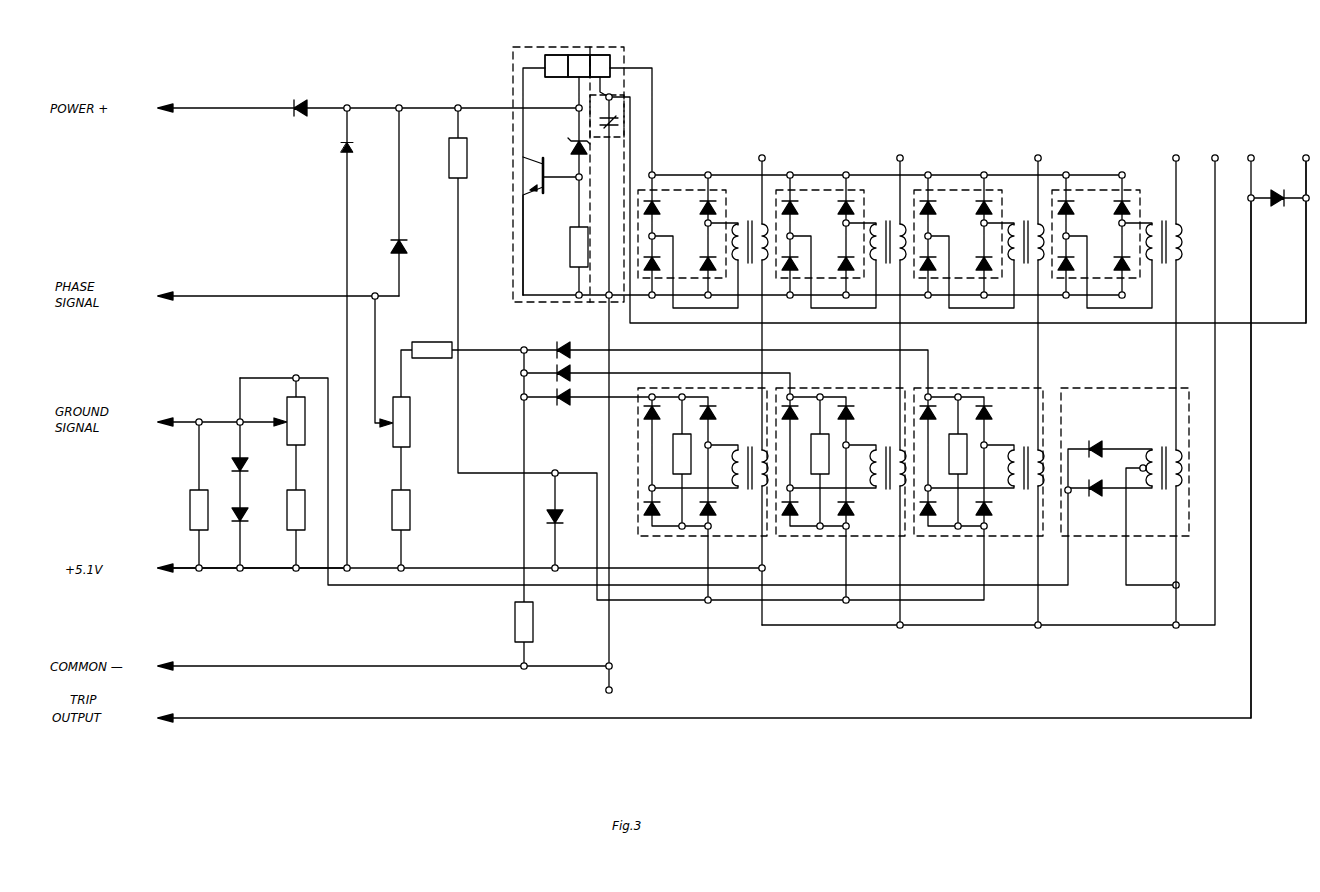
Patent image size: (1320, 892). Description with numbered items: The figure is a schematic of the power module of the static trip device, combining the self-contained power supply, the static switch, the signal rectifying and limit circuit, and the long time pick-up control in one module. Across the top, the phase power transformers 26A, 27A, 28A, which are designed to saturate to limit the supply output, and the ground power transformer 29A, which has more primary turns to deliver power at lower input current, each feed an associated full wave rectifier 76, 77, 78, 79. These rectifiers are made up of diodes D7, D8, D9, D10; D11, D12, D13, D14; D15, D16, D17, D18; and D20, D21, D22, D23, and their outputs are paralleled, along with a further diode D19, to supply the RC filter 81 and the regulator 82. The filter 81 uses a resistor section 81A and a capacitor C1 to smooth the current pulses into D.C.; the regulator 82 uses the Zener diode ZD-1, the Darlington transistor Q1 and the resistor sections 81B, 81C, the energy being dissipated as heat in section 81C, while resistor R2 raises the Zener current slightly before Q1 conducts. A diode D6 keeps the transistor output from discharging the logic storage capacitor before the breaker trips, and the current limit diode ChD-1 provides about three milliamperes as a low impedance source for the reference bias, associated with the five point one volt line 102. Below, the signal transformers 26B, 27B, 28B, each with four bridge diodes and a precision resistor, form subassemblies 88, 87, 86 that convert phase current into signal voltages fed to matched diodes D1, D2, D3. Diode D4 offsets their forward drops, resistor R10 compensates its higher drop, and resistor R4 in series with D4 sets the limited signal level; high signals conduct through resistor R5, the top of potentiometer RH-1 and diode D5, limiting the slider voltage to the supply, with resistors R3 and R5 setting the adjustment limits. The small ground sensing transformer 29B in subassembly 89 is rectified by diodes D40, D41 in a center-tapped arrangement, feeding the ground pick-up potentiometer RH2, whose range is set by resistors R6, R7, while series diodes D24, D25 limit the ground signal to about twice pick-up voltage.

The regulator 82 is at (513, 52).
The RC filter 81 is at (592, 44).
The resistor section 81A is at (598, 55).
The resistor section 81B is at (579, 55).
The resistor section 81C is at (556, 55).
The Zener diode ZD-1 is at (572, 142).
The transistor Q1 is at (547, 191).
The resistor R2 is at (569, 252).
The capacitor C1 is at (619, 122).
The diode D6 is at (303, 101).
The current limit diode ChD-1 is at (339, 146).
The resistor R4 is at (449, 159).
The diode D5 is at (405, 248).
The resistor R5 is at (427, 342).
The potentiometer RH-1 is at (411, 405).
The resistor R3 is at (411, 514).
The diode D1 is at (557, 350).
The diode D2 is at (557, 373).
The diode D3 is at (557, 398).
The diode D4 is at (561, 512).
The resistor R10 is at (533, 627).
The ground pick-up control potentiometer RH2 is at (287, 402).
The diode D24 is at (248, 466).
The diode D25 is at (248, 512).
The resistor R7 is at (190, 512).
The resistor R6 is at (289, 534).
The 5.1 volt line 102 is at (262, 572).
The diode D19 is at (1283, 206).
The full wave rectifier 76 is at (688, 223).
The full wave rectifier 77 is at (826, 223).
The full wave rectifier 78 is at (964, 223).
The full wave bridge rectifier 79 is at (1102, 223).
The diode D7 is at (661, 208).
The diode D8 is at (659, 262).
The diode D9 is at (700, 214).
The diode D10 is at (700, 265).
The diode D11 is at (799, 208).
The diode D12 is at (797, 262).
The diode D13 is at (838, 214).
The diode D14 is at (838, 265).
The diode D15 is at (937, 208).
The diode D16 is at (935, 262).
The diode D17 is at (976, 214).
The diode D18 is at (976, 265).
The diode D20 is at (1075, 208).
The diode D21 is at (1073, 262).
The diode D22 is at (1114, 214).
The diode D23 is at (1114, 265).
The power transformer 26A is at (746, 222).
The power transformer 27A is at (884, 222).
The power transformer 28A is at (1022, 222).
The ground power transformer 29A is at (1160, 222).
The signal transformer 26B is at (746, 448).
The signal transformer 27B is at (884, 448).
The signal transformer 28B is at (1022, 448).
The ground sensing transformer 29B is at (1163, 448).
The subassembly 88 is at (737, 537).
The subassembly 87 is at (875, 537).
The subassembly 86 is at (1013, 537).
The rectifier circuit 89 is at (1125, 488).
The diode D40 is at (1096, 442).
The diode D41 is at (1096, 497).